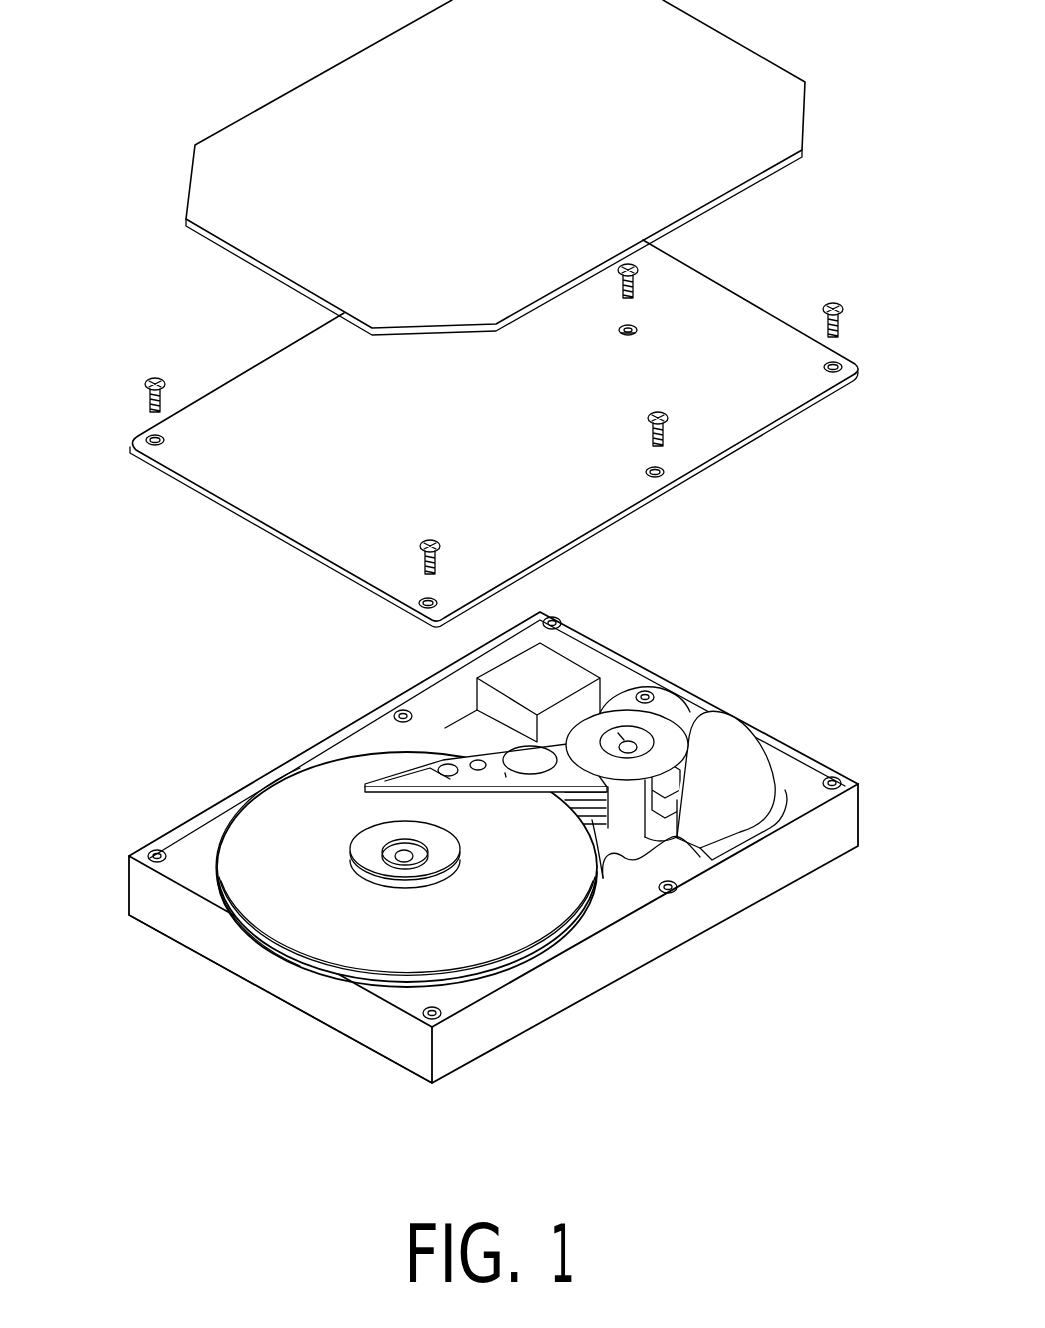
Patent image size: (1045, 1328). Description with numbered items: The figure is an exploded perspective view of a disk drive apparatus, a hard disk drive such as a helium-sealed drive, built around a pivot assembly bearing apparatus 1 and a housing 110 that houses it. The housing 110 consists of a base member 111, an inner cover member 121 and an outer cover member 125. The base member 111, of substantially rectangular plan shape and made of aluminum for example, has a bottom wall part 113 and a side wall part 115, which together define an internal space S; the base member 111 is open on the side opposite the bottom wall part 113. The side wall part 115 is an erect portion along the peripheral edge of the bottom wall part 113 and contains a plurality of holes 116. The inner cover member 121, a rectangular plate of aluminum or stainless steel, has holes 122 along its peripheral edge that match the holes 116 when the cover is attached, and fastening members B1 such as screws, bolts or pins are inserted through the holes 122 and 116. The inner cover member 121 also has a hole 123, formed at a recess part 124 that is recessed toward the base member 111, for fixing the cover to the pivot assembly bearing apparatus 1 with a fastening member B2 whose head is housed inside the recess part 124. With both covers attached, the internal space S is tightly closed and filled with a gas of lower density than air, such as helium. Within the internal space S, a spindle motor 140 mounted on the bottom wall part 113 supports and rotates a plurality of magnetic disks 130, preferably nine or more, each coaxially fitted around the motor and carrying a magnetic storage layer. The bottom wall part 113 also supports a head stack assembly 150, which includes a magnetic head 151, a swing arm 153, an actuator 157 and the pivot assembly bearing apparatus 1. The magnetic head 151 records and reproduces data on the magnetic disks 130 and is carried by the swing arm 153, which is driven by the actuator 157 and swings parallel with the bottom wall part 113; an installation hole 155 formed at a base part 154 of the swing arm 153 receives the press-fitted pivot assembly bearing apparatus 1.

The pivot assembly bearing apparatus 1 is at (622, 736).
The housing 110 is at (96, 266).
The base member 111 is at (185, 832).
The bottom wall part 113 is at (696, 845).
The side wall part 115 is at (325, 997).
The holes 116 is at (562, 620).
The inner cover member 121 is at (262, 484).
The holes 122 is at (162, 436).
The hole 123 is at (636, 328).
The recess part 124 is at (640, 322).
The outer cover member 125 is at (312, 213).
The magnetic disks 130 is at (445, 938).
The spindle motor 140 is at (385, 853).
The head stack assembly 150 is at (662, 658).
The magnetic head 151 is at (392, 778).
The swing arm 153 is at (505, 773).
The base part 154 is at (604, 724).
The installation hole 155 is at (695, 710).
The actuator 157 is at (733, 742).
The fastening members B1 is at (158, 378).
The fastening member B2 is at (640, 268).
The internal space S is at (618, 838).